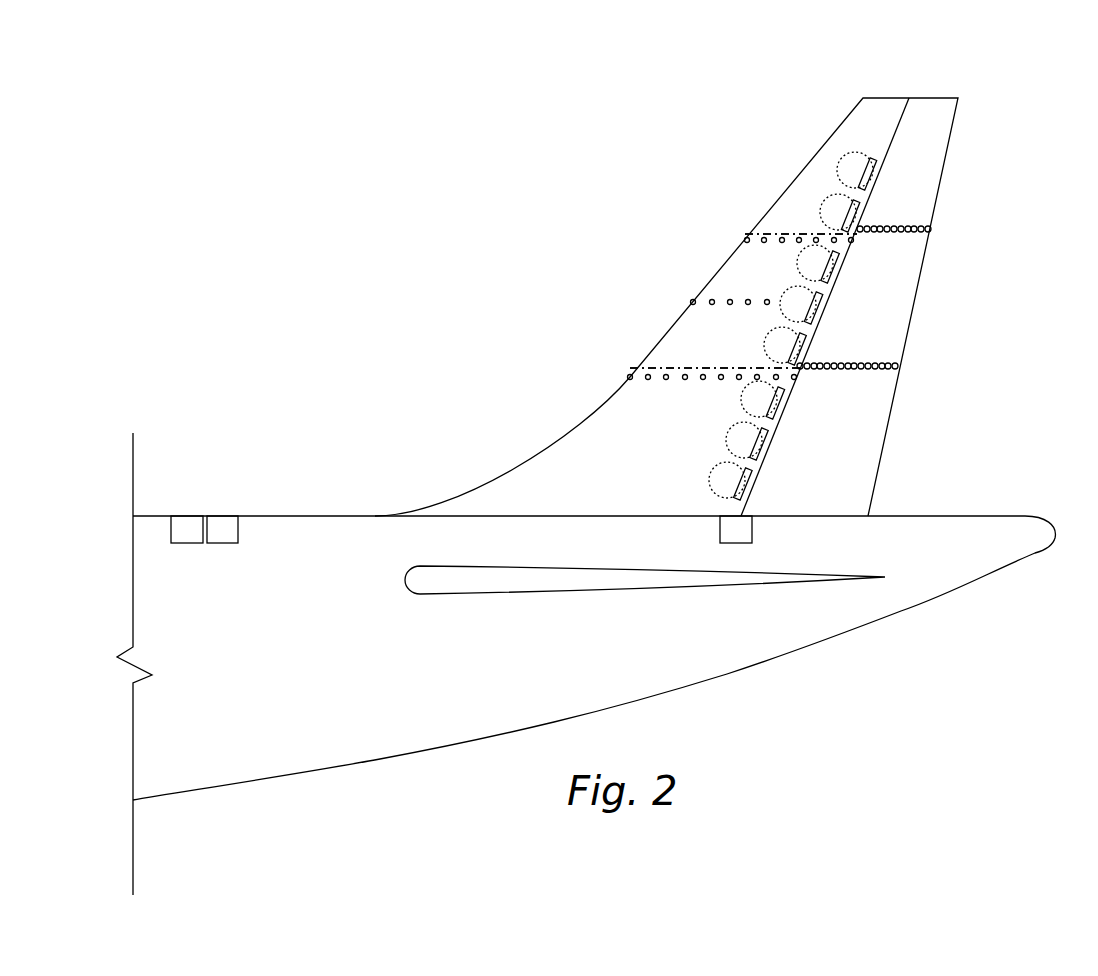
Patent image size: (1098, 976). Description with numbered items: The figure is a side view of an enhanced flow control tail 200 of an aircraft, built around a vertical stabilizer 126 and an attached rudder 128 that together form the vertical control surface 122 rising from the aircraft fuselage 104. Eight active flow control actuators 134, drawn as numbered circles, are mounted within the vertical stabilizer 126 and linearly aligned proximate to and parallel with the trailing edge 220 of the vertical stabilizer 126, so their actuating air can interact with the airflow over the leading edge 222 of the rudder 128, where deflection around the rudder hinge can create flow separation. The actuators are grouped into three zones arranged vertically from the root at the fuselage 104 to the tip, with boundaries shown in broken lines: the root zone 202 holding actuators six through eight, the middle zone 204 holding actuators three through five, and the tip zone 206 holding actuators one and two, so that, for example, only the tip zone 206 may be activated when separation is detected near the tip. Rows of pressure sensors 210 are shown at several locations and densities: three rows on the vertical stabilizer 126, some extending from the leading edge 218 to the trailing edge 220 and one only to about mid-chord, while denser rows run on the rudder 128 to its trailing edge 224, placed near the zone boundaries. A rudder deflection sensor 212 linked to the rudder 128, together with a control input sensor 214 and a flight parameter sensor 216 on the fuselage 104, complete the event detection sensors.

The enhanced flow control tail 200 is at (273, 115).
The aircraft fuselage 104 is at (353, 542).
The vertical control surface 122 is at (913, 98).
The vertical stabilizer 126 is at (807, 185).
The rudder 128 is at (910, 210).
The active flow control actuators 134 is at (726, 440).
The root zone 202 is at (658, 431).
The middle zone 204 is at (708, 353).
The tip zone 206 is at (779, 221).
The pressure sensors 210 is at (747, 239).
The rudder deflection sensor 212 is at (737, 528).
The control input sensor 214 is at (187, 530).
The flight parameter sensor 216 is at (227, 530).
The leading edge of the vertical stabilizer 218 is at (813, 155).
The trailing edge of the vertical stabilizer 220 is at (893, 135).
The leading edge of the rudder 222 is at (890, 162).
The trailing edge of the rudder 224 is at (957, 128).